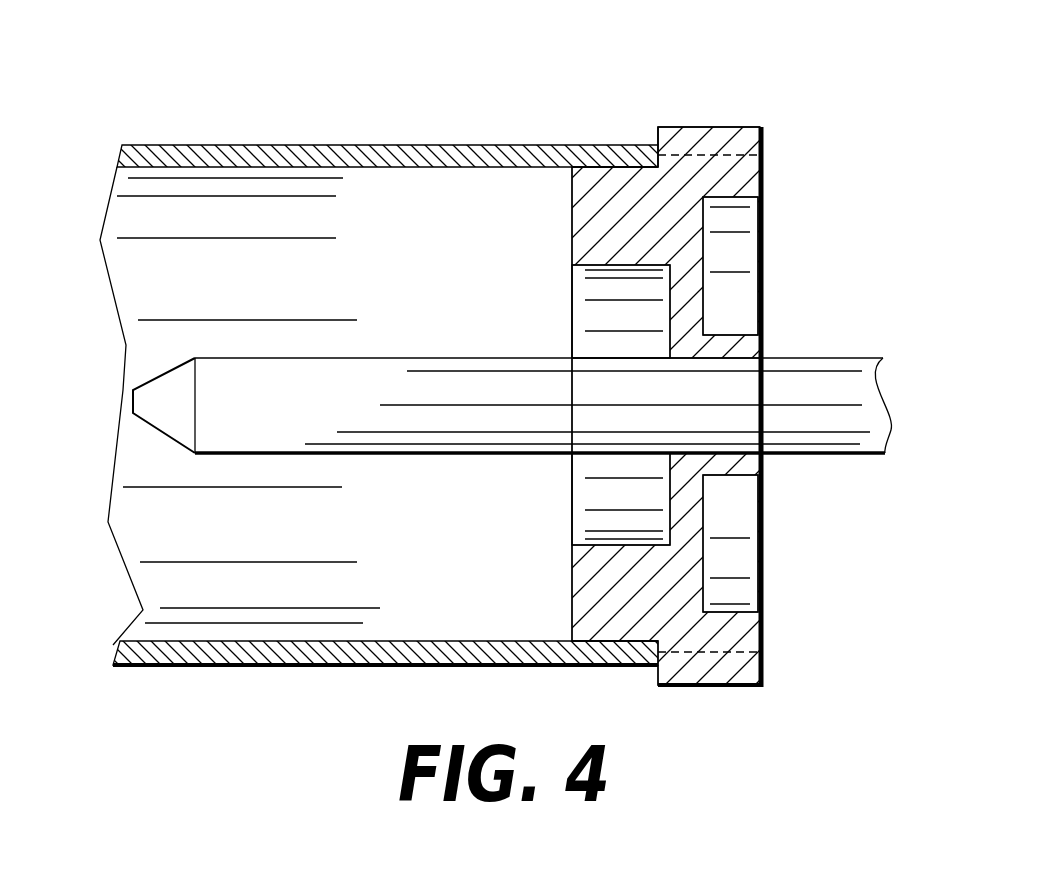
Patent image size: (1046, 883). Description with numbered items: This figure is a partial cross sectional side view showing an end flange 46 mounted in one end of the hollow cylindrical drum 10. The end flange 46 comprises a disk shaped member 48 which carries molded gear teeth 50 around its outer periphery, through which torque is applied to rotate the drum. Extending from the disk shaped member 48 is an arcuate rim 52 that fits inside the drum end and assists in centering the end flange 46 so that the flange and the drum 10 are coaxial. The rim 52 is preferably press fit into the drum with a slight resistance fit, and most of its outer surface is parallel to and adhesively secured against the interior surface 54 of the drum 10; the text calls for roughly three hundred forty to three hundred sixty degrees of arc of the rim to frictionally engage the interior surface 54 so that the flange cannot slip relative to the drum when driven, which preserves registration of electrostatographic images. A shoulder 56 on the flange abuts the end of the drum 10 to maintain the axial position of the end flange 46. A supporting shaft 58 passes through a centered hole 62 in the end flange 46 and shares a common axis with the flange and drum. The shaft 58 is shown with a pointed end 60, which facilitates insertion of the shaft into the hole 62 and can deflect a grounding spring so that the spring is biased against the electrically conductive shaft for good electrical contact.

The drum 10 is at (166, 144).
The end flange 46 is at (808, 239).
The disk shaped member 48 is at (752, 635).
The gear teeth 50 is at (712, 133).
The arcuate rim 52 is at (609, 620).
The interior surface 54 is at (486, 634).
The shoulder 56 is at (641, 130).
The supporting shaft 58 is at (857, 358).
The pointed end 60 is at (146, 370).
The hole 62 is at (778, 349).